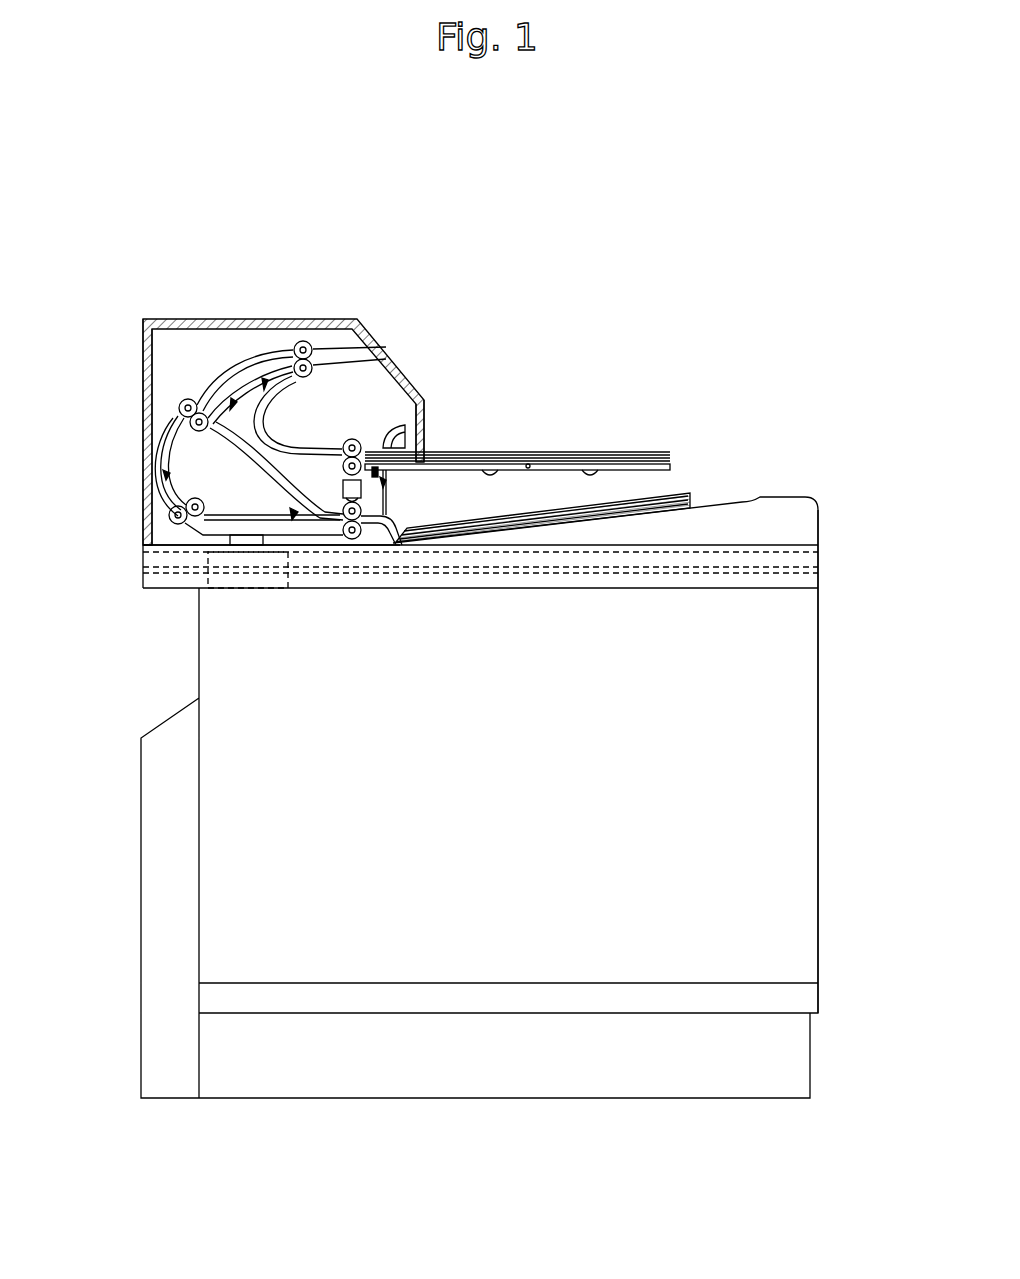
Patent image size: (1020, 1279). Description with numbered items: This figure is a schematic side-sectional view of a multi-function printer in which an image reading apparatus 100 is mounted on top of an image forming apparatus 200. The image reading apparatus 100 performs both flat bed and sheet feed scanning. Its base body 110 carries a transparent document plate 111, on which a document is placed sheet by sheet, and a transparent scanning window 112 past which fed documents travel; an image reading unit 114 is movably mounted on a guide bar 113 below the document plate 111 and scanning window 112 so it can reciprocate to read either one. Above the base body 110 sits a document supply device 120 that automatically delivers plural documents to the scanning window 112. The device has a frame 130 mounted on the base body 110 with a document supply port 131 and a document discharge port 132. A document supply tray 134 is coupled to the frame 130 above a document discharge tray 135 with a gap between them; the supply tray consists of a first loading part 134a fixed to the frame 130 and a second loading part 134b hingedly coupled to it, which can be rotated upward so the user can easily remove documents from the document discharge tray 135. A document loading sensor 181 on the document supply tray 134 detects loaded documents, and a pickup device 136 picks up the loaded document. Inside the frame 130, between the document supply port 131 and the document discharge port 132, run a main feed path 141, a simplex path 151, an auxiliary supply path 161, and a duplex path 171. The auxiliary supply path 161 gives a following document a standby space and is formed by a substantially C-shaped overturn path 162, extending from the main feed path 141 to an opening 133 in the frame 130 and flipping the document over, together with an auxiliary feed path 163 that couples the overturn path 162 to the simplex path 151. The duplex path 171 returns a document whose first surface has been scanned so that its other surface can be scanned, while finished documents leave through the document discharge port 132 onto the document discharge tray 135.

The image reading apparatus 100 is at (666, 320).
The base body 110 is at (143, 588).
The document plate 111 is at (822, 552).
The scanning window 112 is at (205, 546).
The guide bar 113 is at (822, 574).
The image reading unit 114 is at (236, 578).
The document supply device 120 is at (112, 477).
The frame 130 is at (143, 333).
The document supply port 131 is at (441, 434).
The document discharge port 132 is at (398, 520).
The opening 133 is at (397, 350).
The document supply tray 134 is at (691, 460).
The first loading part 134a is at (505, 465).
The second loading part 134b is at (604, 465).
The document discharge tray 135 is at (744, 500).
The pickup device 136 is at (406, 416).
The main feed path 141 is at (296, 440).
The simplex path 151 is at (172, 436).
The auxiliary supply path 161 is at (262, 272).
The overturn path 162 is at (277, 350).
The auxiliary feed path 163 is at (220, 365).
The duplex path 171 is at (285, 540).
The document loading sensor 181 is at (391, 482).
The image forming apparatus 200 is at (843, 830).